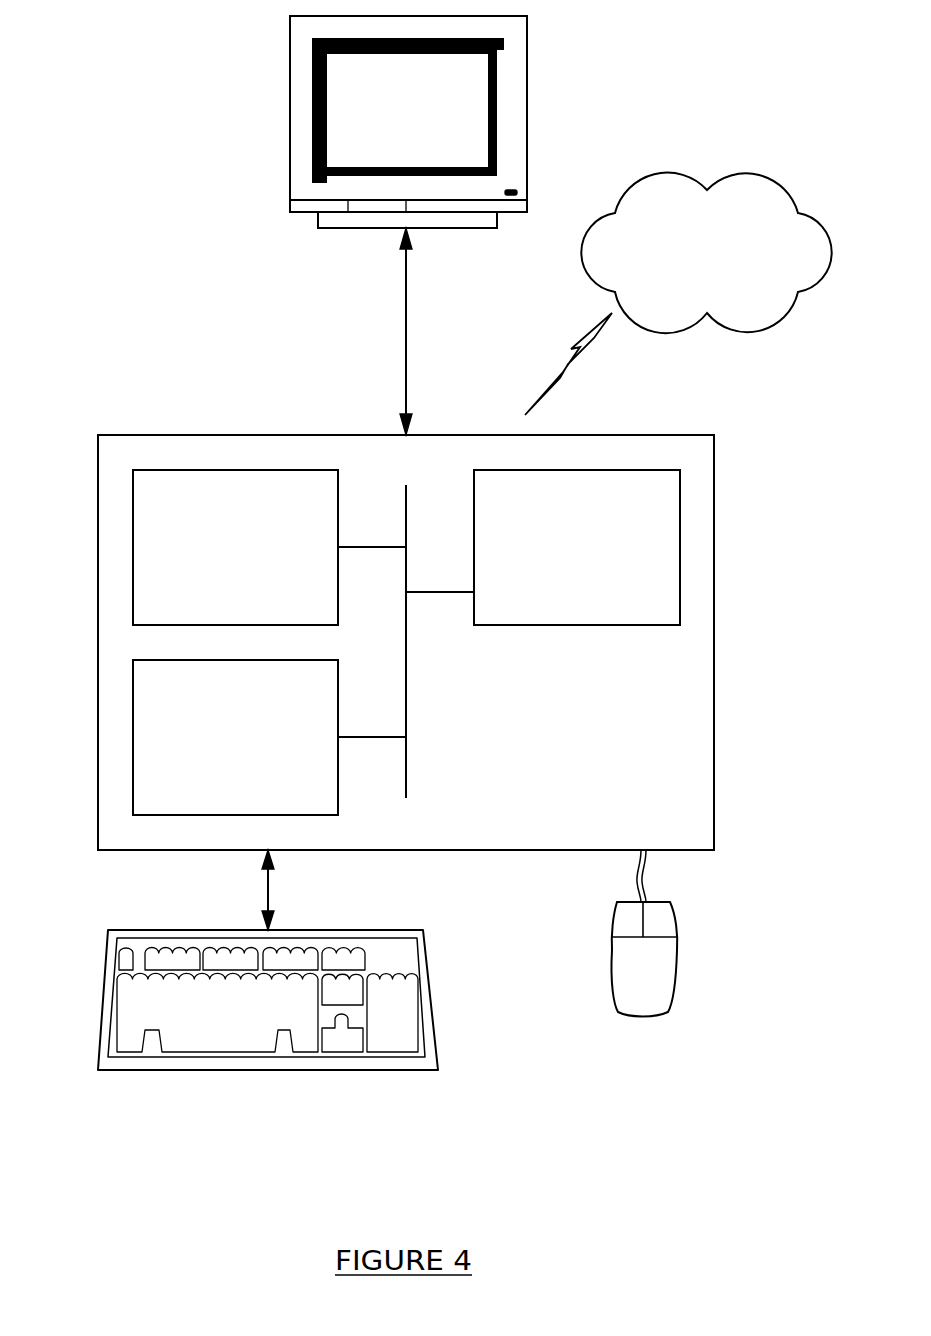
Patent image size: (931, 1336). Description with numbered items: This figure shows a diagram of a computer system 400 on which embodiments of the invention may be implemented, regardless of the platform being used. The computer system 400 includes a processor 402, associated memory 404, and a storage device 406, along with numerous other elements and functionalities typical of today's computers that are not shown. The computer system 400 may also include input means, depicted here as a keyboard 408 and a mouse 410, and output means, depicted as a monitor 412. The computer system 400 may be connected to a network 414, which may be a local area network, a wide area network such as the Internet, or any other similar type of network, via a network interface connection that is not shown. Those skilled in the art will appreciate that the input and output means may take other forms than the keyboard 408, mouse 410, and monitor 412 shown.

The computer system 400 is at (735, 498).
The processor 402 is at (557, 559).
The memory 404 is at (215, 559).
The storage device 406 is at (215, 750).
The keyboard 408 is at (197, 1026).
The mouse 410 is at (623, 980).
The monitor 412 is at (386, 125).
The network 414 is at (685, 264).